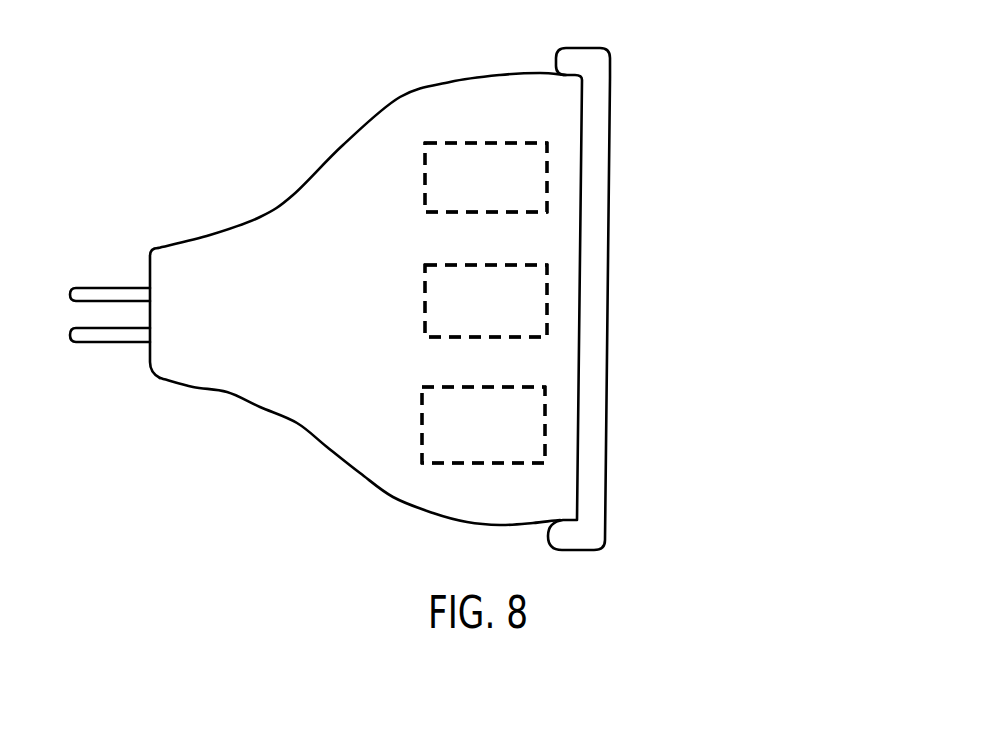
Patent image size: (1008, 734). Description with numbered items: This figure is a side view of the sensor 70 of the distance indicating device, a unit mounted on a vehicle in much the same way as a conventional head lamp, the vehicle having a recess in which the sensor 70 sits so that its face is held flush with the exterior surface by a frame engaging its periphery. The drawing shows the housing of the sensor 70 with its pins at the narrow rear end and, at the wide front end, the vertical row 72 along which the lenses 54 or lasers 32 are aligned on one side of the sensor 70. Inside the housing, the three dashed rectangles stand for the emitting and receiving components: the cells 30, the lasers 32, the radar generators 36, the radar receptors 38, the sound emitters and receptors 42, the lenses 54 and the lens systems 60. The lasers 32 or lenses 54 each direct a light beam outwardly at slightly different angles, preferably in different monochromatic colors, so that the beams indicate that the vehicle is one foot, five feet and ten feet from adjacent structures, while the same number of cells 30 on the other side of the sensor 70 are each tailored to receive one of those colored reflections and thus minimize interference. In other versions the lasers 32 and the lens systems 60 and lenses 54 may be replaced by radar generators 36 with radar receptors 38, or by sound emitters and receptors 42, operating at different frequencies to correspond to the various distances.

The cells 30 is at (545, 427).
The lasers 32 is at (660, 303).
The radar generator 36 is at (660, 303).
The radar receptor 38 is at (660, 303).
The sound emitters and receptors 42 is at (660, 303).
The lenses 54 is at (660, 303).
The lens systems 60 is at (660, 303).
The sensor 70 is at (297, 423).
The vertical row 72 is at (612, 70).